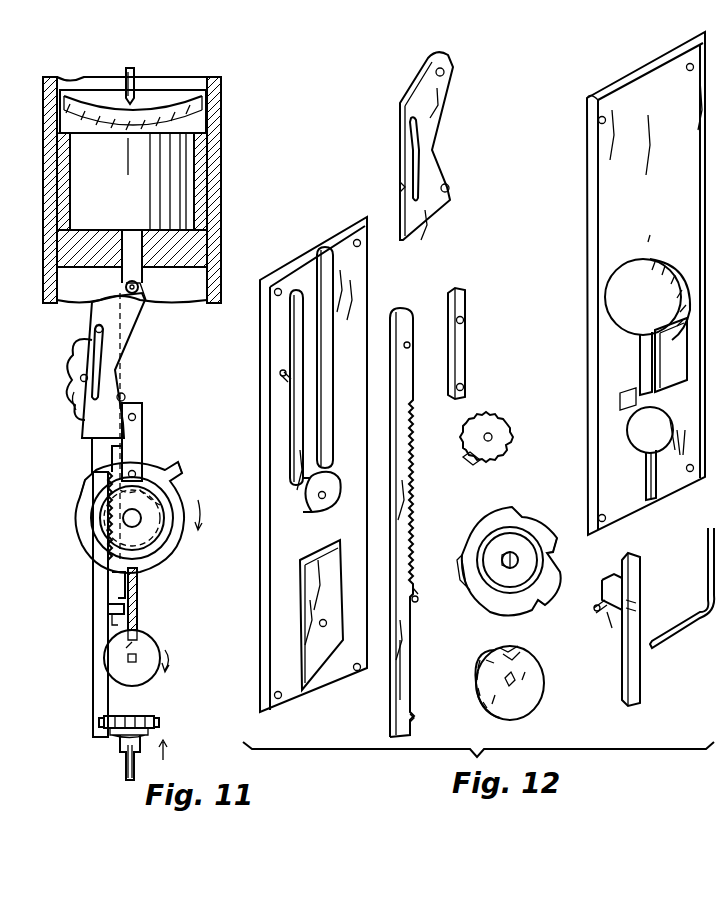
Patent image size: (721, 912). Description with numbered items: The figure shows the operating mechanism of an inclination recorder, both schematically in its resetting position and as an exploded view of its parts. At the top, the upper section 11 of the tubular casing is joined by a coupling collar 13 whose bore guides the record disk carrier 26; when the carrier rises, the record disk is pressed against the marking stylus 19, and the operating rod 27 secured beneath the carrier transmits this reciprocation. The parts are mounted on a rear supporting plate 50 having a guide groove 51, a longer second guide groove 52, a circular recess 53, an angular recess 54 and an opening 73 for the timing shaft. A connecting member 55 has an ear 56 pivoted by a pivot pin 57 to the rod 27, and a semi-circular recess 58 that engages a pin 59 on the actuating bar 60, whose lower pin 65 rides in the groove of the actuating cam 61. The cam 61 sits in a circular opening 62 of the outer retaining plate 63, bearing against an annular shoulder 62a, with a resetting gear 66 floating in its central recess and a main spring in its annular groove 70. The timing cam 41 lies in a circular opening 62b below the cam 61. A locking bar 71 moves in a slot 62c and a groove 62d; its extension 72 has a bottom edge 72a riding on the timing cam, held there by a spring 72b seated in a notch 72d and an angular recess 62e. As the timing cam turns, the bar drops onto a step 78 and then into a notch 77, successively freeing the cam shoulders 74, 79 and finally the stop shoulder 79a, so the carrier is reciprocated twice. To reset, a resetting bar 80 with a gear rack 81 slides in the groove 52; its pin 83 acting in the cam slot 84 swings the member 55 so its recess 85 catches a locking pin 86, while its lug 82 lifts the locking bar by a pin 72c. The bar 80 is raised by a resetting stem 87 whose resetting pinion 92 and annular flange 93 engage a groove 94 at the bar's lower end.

In FIG. 11, the upper section 11 is at (221, 91).
In FIG. 11, the coupling collar 13 is at (222, 208).
In FIG. 11, the marking stylus 19 is at (134, 70).
In FIG. 11, the record disk carrier 26 is at (176, 160).
In FIG. 11, the operating rod 27 is at (134, 240).
In FIG. 11, the timing cam 41 is at (147, 642).
In FIG. 12, the timing cam 41 is at (524, 701).
In FIG. 11, the rear supporting plate 50 is at (74, 400).
In FIG. 12, the rear supporting plate 50 is at (262, 345).
In FIG. 12, the guide groove 51 is at (325, 288).
In FIG. 12, the second guide groove 52 is at (296, 452).
In FIG. 12, the circular recess 53 is at (310, 510).
In FIG. 12, the angular recess 54 is at (306, 572).
In FIG. 11, the connecting member 55 is at (116, 386).
In FIG. 12, the connecting member 55 is at (437, 120).
In FIG. 11, the ear 56 is at (138, 285).
In FIG. 12, the ear 56 is at (444, 70).
In FIG. 11, the pivot pin 57 is at (146, 300).
In FIG. 11, the semi-circular recess 58 is at (125, 397).
In FIG. 12, the semi-circular recess 58 is at (449, 188).
In FIG. 11, the pin 59 is at (136, 417).
In FIG. 12, the pin 59 is at (463, 318).
In FIG. 11, the actuating bar 60 is at (142, 437).
In FIG. 12, the actuating bar 60 is at (465, 340).
In FIG. 11, the actuating cam 61 is at (176, 540).
In FIG. 12, the actuating cam 61 is at (508, 512).
In FIG. 12, the circular opening 62 is at (648, 240).
In FIG. 12, the annular shoulder 62a is at (686, 280).
In FIG. 12, the circular opening 62b is at (627, 432).
In FIG. 12, the slot 62c is at (640, 365).
In FIG. 12, the groove 62d is at (656, 495).
In FIG. 12, the angular recess 62e is at (665, 318).
In FIG. 12, the outer retaining plate 63 is at (593, 183).
In FIG. 11, the pin 65 is at (134, 478).
In FIG. 12, the pin 65 is at (464, 387).
In FIG. 12, the resetting gear 66 is at (494, 433).
In FIG. 11, the annular groove 70 is at (160, 505).
In FIG. 12, the locking bar 71 is at (640, 668).
In FIG. 12, the extension 72 is at (604, 585).
In FIG. 12, the bottom edge 72a is at (610, 622).
In FIG. 12, the spring 72b is at (708, 560).
In FIG. 11, the pin 72c is at (108, 606).
In FIG. 12, the pin 72c is at (594, 608).
In FIG. 12, the notch 72d is at (636, 605).
In FIG. 12, the opening 73 is at (320, 624).
In FIG. 11, the shoulder 74 is at (112, 572).
In FIG. 12, the shoulder 74 is at (552, 545).
In FIG. 11, the notch 77 is at (126, 648).
In FIG. 12, the notch 77 is at (486, 662).
In FIG. 11, the step 78 is at (135, 645).
In FIG. 12, the step 78 is at (512, 656).
In FIG. 11, the second shoulder 79 is at (82, 490).
In FIG. 12, the second shoulder 79 is at (540, 603).
In FIG. 11, the stop shoulder 79a is at (182, 473).
In FIG. 12, the stop shoulder 79a is at (415, 590).
In FIG. 11, the resetting bar 80 is at (93, 646).
In FIG. 12, the resetting bar 80 is at (410, 667).
In FIG. 12, the gear rack 81 is at (412, 508).
In FIG. 11, the lug 82 is at (112, 616).
In FIG. 12, the lug 82 is at (418, 601).
In FIG. 11, the pin 83 is at (95, 331).
In FIG. 12, the pin 83 is at (410, 343).
In FIG. 11, the cam slot 84 is at (102, 382).
In FIG. 12, the cam slot 84 is at (417, 170).
In FIG. 11, the recess 85 is at (74, 356).
In FIG. 12, the recess 85 is at (400, 187).
In FIG. 11, the locking pin 86 is at (80, 378).
In FIG. 12, the locking pin 86 is at (290, 377).
In FIG. 11, the resetting stem 87 is at (126, 766).
In FIG. 11, the resetting pinion 92 is at (140, 716).
In FIG. 11, the annular flange 93 is at (159, 722).
In FIG. 11, the groove 94 is at (99, 722).
In FIG. 12, the groove 94 is at (414, 718).